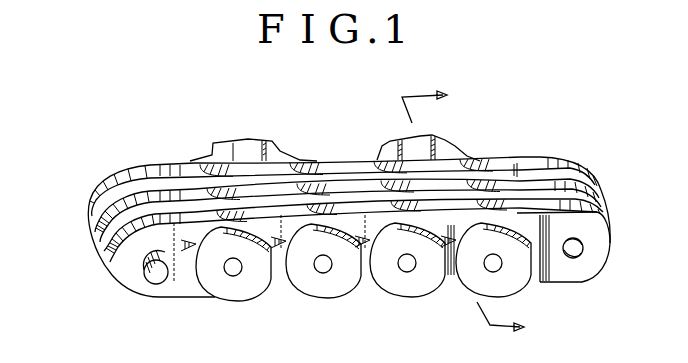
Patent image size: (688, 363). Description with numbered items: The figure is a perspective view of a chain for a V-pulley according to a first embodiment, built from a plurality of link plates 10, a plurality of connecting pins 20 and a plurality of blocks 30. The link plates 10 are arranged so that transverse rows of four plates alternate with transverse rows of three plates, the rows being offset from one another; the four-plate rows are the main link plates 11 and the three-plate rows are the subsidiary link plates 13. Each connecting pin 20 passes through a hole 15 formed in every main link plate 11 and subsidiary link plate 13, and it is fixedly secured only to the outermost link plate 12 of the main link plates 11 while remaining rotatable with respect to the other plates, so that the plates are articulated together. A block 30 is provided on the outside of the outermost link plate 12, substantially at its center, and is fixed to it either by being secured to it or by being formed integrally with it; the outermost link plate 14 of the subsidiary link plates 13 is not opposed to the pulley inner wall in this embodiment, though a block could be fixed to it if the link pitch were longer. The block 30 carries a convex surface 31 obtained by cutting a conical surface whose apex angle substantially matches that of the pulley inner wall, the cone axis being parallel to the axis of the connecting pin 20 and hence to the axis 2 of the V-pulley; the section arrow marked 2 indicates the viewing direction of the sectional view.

The link plates 10 is at (141, 165).
The main link plates 11 is at (306, 222).
The subsidiary link plates 13 is at (352, 178).
The outermost link plate 12 is at (466, 158).
The outermost link plate 14 is at (538, 162).
The hole 15 is at (575, 259).
The connecting pin 20 is at (158, 285).
The block 30 is at (258, 280).
The convex surface 31 is at (304, 275).
The axis 2 is at (463, 212).